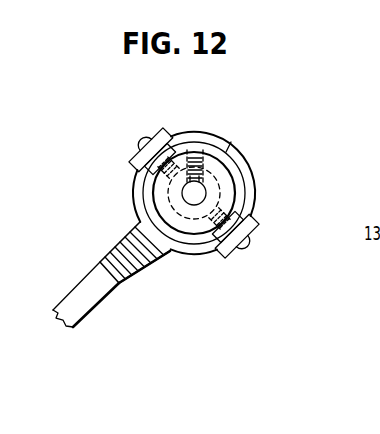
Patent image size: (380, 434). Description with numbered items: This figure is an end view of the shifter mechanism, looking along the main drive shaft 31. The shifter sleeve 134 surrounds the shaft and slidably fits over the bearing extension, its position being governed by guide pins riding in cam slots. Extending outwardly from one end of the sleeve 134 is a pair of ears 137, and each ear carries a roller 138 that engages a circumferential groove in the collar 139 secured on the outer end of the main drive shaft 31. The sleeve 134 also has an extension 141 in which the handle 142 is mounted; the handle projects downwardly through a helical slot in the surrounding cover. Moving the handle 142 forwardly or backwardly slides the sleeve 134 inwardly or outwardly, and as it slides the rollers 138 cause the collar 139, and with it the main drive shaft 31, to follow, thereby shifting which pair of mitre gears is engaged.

The main drive shaft 31 is at (206, 193).
The sleeve 134 is at (233, 146).
The ears 137 is at (166, 129).
The roller 138 is at (207, 248).
The collar 139 is at (226, 173).
The extension 141 is at (112, 238).
The handle 142 is at (72, 292).